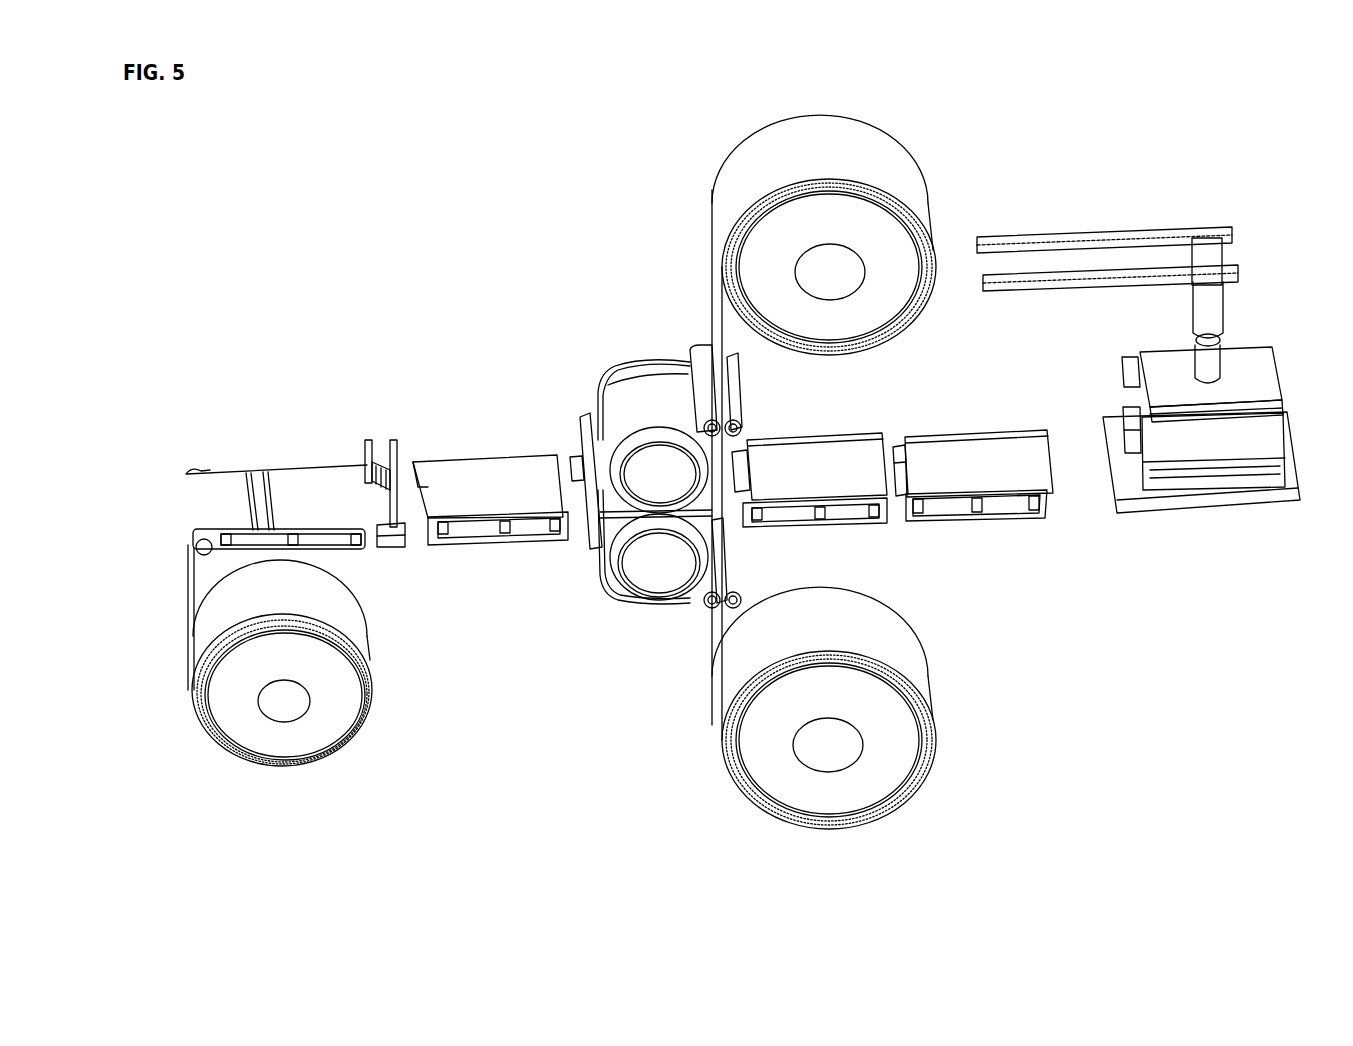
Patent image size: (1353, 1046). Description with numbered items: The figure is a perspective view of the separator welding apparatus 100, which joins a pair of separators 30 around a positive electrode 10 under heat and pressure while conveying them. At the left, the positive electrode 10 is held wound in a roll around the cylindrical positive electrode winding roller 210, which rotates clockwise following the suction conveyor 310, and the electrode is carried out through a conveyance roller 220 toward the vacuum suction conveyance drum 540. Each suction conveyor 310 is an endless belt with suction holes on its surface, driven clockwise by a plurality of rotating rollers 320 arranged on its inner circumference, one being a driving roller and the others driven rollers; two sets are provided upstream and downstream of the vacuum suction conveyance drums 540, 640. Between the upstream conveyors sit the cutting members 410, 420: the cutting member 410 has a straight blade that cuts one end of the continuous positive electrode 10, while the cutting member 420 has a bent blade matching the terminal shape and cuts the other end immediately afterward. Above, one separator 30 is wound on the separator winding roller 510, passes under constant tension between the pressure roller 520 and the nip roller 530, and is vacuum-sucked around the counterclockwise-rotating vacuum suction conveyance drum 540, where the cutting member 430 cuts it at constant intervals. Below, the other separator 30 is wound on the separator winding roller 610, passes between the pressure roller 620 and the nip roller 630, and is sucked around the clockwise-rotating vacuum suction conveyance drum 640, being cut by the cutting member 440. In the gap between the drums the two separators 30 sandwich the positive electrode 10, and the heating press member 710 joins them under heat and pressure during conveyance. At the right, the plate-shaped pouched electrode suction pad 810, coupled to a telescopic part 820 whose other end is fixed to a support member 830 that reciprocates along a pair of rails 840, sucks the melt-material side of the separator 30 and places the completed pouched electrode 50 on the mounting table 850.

The separator welding apparatus 100 is at (249, 133).
The positive electrode 10 is at (262, 475).
The separator 30 is at (612, 382).
The pouched electrode 50 is at (1122, 362).
The positive electrode winding roller 210 is at (312, 756).
The conveyance roller 220 is at (200, 469).
The suction conveyor 310 is at (322, 550).
The rotating roller 320 is at (366, 548).
The cutting member 410 is at (398, 448).
The cutting member 420 is at (365, 452).
The cutting member 430 is at (404, 548).
The cutting member 440 is at (587, 546).
The separator winding roller 510 is at (860, 340).
The pressure roller 520 is at (739, 358).
The nip roller 530 is at (698, 347).
The vacuum suction conveyance drum 540 is at (628, 364).
The separator winding roller 610 is at (868, 806).
The pressure roller 620 is at (738, 600).
The nip roller 630 is at (708, 607).
The vacuum suction conveyance drum 640 is at (640, 603).
The heating press member 710 is at (771, 450).
The pouched electrode suction pad 810 is at (1246, 352).
The telescopic part 820 is at (1194, 305).
The support member 830 is at (1225, 255).
The rails 840 is at (1085, 275).
The mounting table 850 is at (1218, 502).